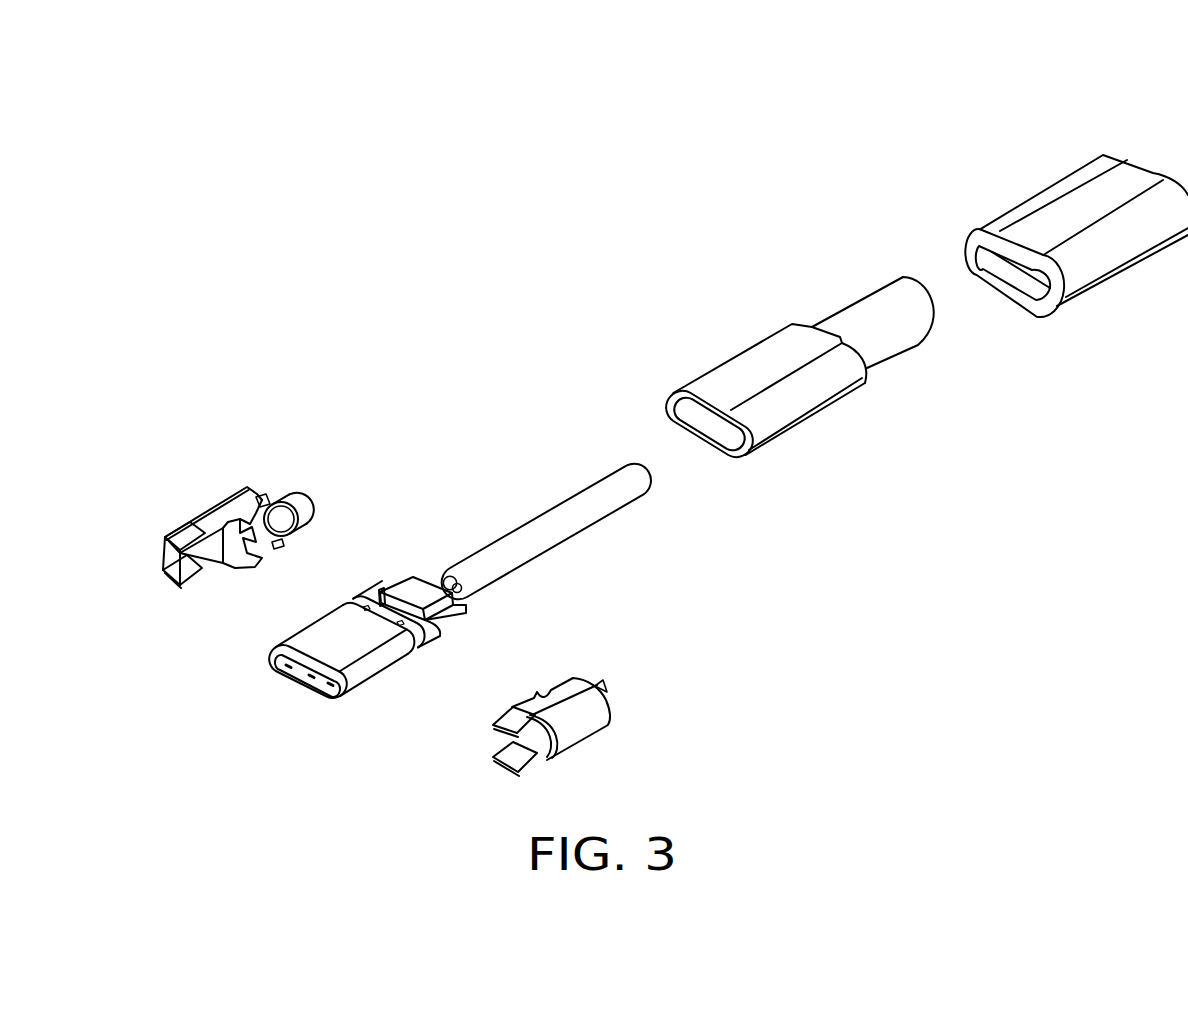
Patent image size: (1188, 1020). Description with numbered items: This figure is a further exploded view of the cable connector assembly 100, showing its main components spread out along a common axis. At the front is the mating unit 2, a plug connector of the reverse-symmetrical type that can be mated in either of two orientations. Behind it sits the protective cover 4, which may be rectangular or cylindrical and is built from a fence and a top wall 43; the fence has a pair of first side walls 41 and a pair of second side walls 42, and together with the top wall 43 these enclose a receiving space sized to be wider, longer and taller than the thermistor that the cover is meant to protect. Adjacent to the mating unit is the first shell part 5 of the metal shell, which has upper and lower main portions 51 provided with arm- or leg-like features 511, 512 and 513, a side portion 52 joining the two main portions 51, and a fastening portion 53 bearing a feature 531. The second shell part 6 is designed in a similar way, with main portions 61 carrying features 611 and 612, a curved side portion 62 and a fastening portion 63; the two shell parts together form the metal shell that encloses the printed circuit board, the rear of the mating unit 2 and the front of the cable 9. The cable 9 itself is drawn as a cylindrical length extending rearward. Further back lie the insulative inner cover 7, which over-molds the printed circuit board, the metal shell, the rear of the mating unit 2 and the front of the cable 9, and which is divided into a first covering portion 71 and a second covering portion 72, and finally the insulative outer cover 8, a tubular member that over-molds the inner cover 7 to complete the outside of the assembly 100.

The cable connector assembly 100 is at (1000, 115).
The mating unit 2 is at (337, 642).
The protective cover 4 is at (428, 593).
The first side walls 41 is at (375, 594).
The second side walls 42 is at (440, 615).
The top wall 43 is at (433, 593).
The first shell part 5 is at (233, 525).
The main portions 51 is at (242, 512).
The arms or legs 511 is at (237, 556).
The arms or legs 512 is at (290, 513).
The arms or legs 513 is at (195, 537).
The side portion 52 is at (188, 553).
The fastening portion 53 is at (334, 480).
The feature 531 is at (313, 527).
The second shell part 6 is at (535, 710).
The main portions 61 is at (555, 676).
The feature 611 is at (543, 695).
The feature 612 is at (490, 741).
The curved side portion 62 is at (575, 733).
The fastening portion 63 is at (612, 689).
The insulative inner cover 7 is at (818, 387).
The first covering portion 71 is at (770, 372).
The second covering portion 72 is at (890, 323).
The insulative outer cover 8 is at (1025, 174).
The cable 9 is at (545, 527).